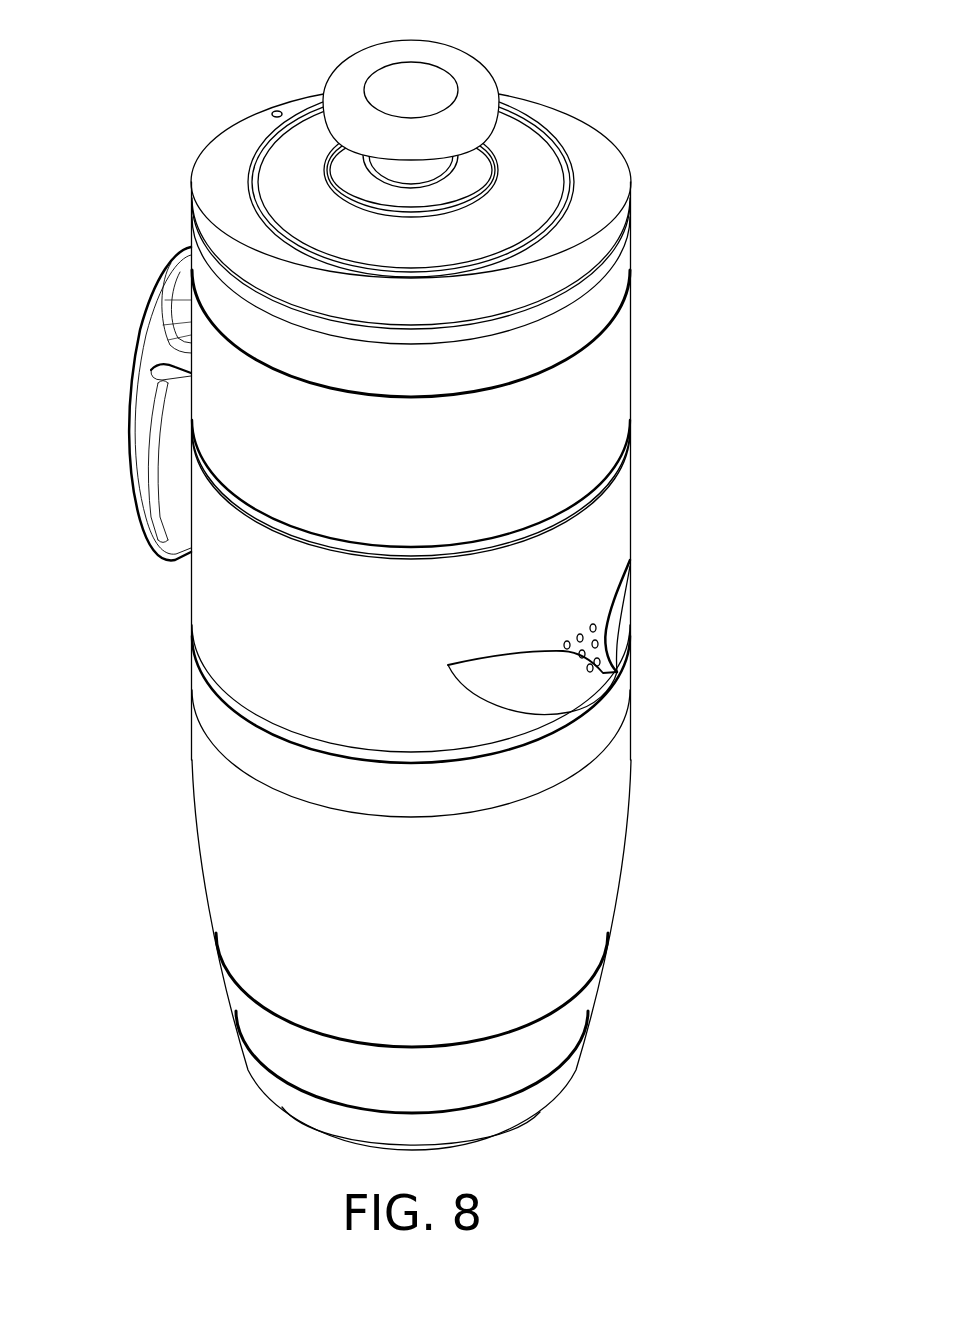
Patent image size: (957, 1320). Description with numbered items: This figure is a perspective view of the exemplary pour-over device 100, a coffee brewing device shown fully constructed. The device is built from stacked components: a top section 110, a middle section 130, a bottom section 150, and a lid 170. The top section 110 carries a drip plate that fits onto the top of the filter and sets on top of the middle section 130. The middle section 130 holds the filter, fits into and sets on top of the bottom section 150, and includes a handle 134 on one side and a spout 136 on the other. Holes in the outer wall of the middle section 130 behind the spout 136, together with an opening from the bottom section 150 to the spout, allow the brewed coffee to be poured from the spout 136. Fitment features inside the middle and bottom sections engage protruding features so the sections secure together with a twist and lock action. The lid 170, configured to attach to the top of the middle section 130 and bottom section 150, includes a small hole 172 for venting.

The pour-over device 100 is at (410, 577).
The top section 110 is at (630, 357).
The middle section 130 is at (630, 497).
The handle 134 is at (152, 312).
The spout 136 is at (632, 597).
The bottom section 150 is at (617, 800).
The lid 170 is at (467, 174).
The hole 172 is at (277, 113).